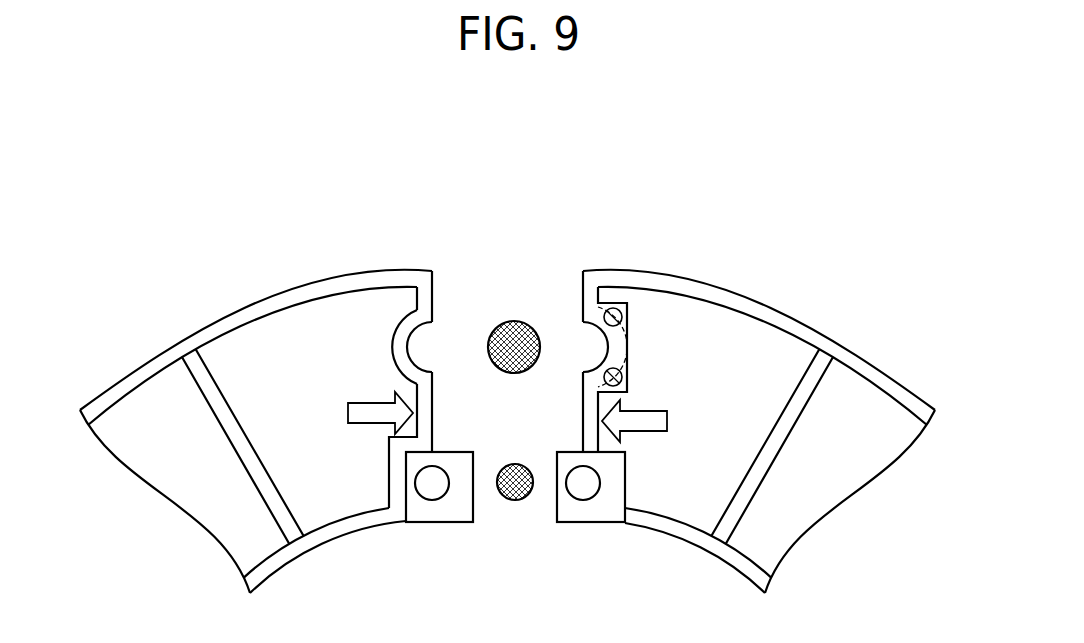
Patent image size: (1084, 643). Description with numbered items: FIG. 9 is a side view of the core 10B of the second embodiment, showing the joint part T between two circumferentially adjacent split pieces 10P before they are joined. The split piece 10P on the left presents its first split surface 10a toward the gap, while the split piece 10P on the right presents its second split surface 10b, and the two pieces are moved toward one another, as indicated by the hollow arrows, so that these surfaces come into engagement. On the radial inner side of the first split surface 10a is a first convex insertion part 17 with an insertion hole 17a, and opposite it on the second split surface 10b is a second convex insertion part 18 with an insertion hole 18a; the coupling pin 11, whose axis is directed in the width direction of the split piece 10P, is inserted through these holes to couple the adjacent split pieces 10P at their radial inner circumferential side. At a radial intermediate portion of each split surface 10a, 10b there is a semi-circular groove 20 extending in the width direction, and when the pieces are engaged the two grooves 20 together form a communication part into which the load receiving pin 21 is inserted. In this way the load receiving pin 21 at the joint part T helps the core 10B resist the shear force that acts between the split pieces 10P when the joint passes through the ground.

The split piece 10P is at (256, 300).
The core 10B is at (656, 383).
The first split surface 10a is at (443, 423).
The second split surface 10b is at (573, 422).
The semi-circular groove 20 is at (415, 330).
The load receiving pin 21 is at (515, 320).
The coupling pin 11 is at (515, 502).
The first convex insertion part 17 is at (421, 543).
The insertion hole 17a is at (421, 494).
The second convex insertion part 18 is at (602, 545).
The insertion hole 18a is at (574, 494).
The joint part T is at (502, 238).